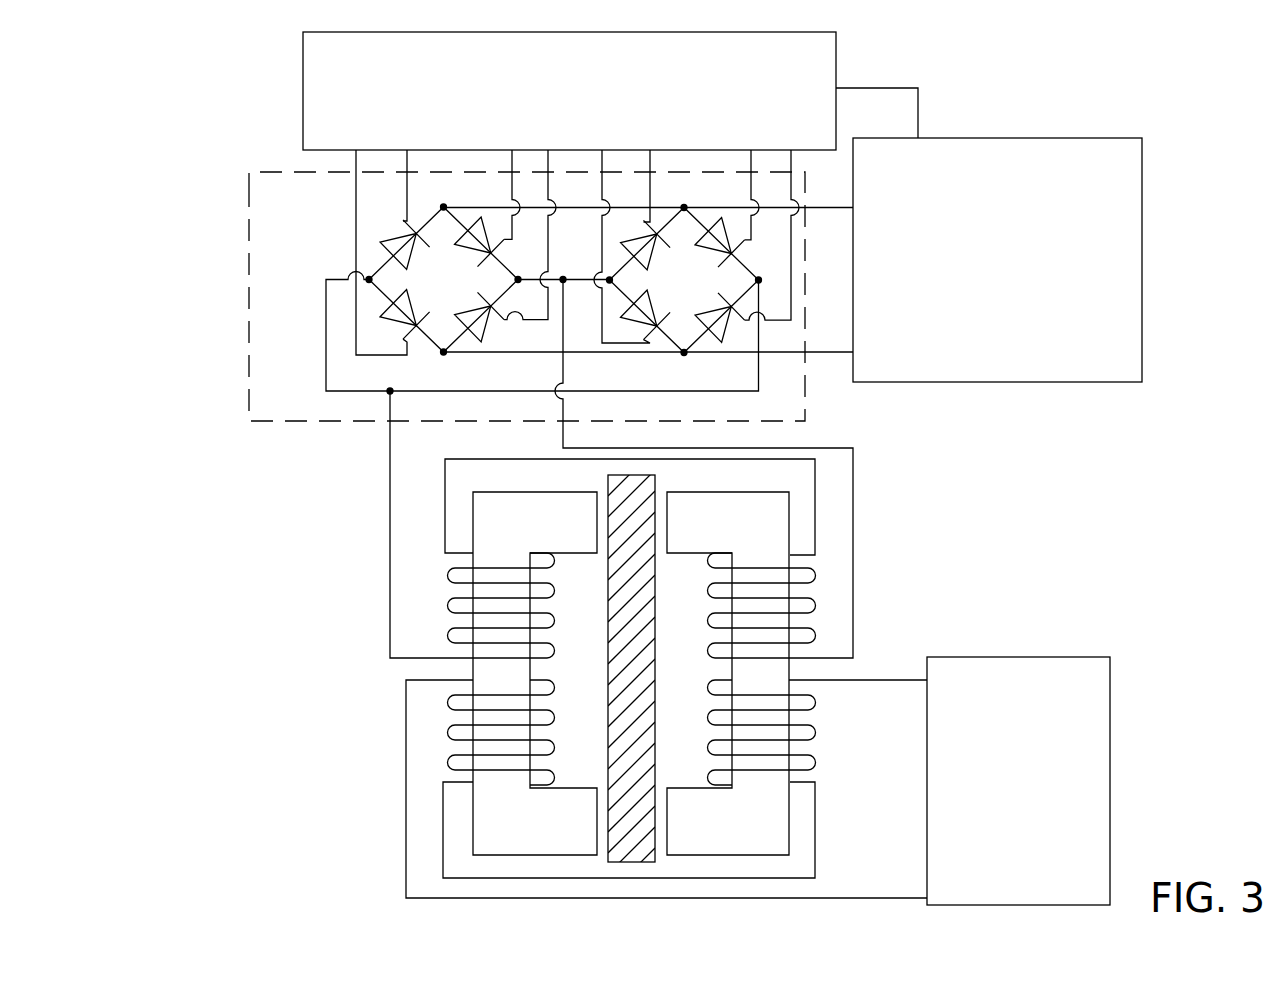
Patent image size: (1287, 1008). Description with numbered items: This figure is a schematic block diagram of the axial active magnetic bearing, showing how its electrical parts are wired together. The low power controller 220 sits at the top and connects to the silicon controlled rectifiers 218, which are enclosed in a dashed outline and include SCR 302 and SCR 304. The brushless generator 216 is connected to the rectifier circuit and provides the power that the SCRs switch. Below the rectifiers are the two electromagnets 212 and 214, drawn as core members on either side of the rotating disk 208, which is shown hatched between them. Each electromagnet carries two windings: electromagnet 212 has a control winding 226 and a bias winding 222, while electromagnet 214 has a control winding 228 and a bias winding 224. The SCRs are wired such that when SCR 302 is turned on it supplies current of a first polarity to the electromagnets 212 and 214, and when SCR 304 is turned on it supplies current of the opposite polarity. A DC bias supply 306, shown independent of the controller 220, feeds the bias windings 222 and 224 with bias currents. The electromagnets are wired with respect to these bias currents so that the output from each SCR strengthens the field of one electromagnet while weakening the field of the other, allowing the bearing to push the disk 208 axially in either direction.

The low power controller 220 is at (836, 57).
The brushless generator 216 is at (1018, 138).
The silicon controlled rectifiers 218 is at (249, 194).
The SCR 302 is at (372, 262).
The SCR 304 is at (748, 262).
The electromagnet 212 is at (500, 492).
The electromagnet 214 is at (788, 833).
The rotating disk 208 is at (655, 482).
The control winding 226 is at (547, 615).
The control winding 228 is at (817, 608).
The bias winding 222 is at (547, 742).
The bias winding 224 is at (817, 728).
The DC bias supply 306 is at (977, 657).